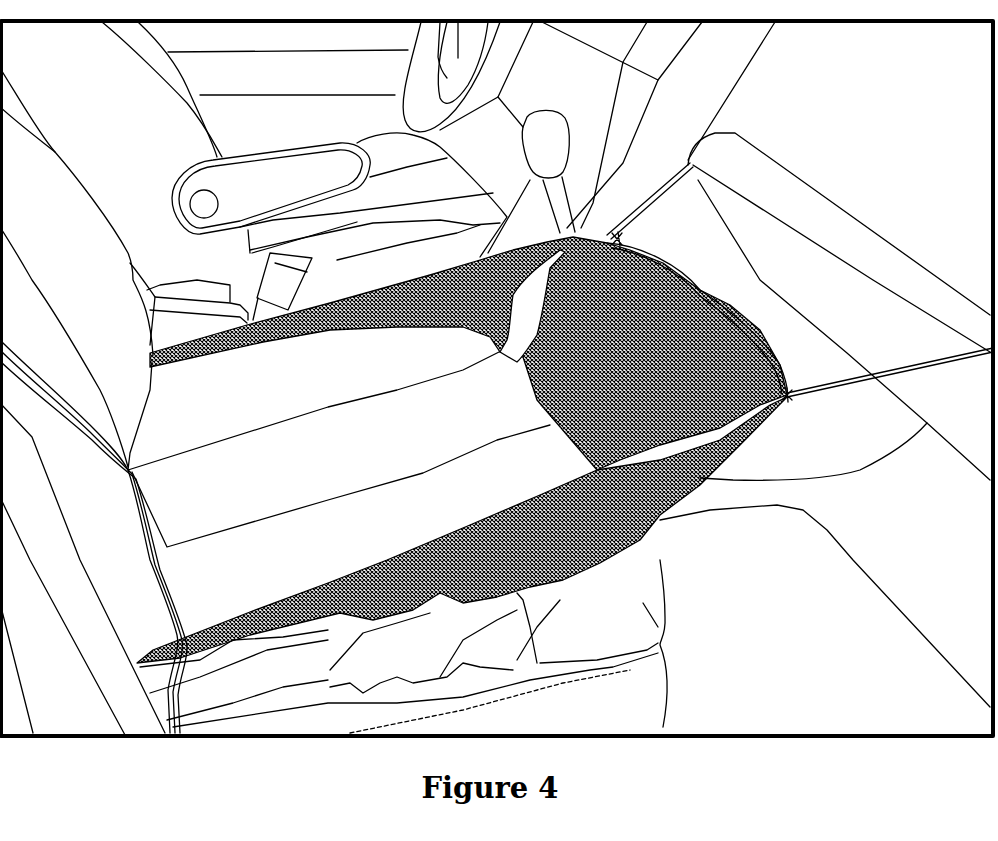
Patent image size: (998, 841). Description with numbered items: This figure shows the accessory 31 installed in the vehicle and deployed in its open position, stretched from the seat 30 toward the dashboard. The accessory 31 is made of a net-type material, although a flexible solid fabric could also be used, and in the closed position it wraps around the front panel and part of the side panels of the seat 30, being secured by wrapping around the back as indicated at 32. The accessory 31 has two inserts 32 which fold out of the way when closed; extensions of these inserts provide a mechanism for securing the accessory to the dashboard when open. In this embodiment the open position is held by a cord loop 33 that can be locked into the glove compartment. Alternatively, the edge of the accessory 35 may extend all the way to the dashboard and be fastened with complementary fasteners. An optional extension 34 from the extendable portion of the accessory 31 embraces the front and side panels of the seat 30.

The seat 30 is at (135, 377).
The accessory 31 is at (512, 600).
The inserts 32 is at (760, 357).
The cord loop 33 is at (647, 217).
The extension 34 is at (665, 617).
The edge of the accessory 35 is at (723, 300).